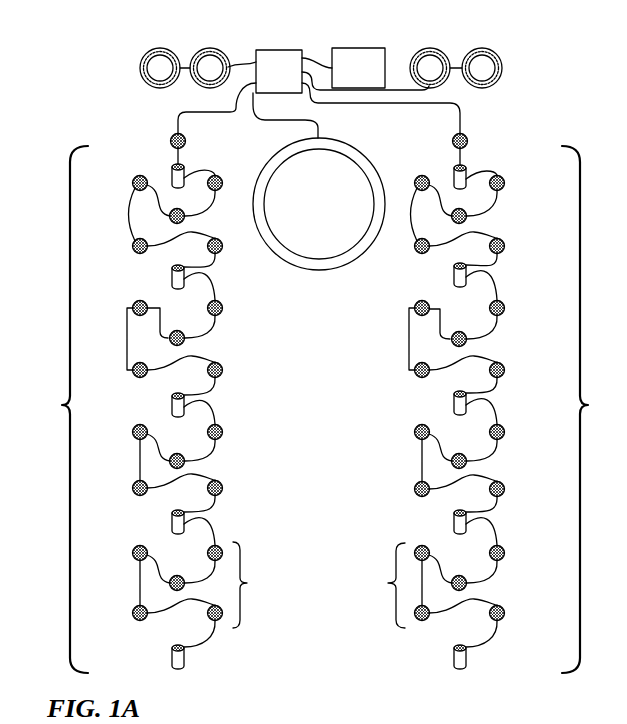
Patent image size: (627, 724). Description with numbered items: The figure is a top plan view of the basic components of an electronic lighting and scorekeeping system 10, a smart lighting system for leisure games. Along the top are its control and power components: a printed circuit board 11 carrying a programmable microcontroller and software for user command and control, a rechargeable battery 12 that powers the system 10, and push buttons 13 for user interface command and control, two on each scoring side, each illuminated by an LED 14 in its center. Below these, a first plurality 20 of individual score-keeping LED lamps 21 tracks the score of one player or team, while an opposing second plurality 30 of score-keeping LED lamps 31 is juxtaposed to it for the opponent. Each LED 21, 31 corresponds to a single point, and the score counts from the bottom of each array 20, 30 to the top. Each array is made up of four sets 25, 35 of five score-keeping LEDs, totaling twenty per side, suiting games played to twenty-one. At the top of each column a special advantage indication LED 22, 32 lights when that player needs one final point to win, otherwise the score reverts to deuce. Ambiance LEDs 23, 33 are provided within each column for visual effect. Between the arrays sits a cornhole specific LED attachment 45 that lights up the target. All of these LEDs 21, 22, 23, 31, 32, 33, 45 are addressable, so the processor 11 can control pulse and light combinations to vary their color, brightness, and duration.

The electronic lighting and scorekeeping system 10 is at (67, 122).
The printed circuit board 11 is at (274, 50).
The rechargeable battery 12 is at (360, 48).
The push button 13 is at (157, 48).
The LED 14 is at (208, 58).
The first plurality of score-keeping LED lamps 20 is at (486, 393).
The score-keeping LED lamp 21 is at (505, 185).
The advantage indication score-keeping LED 22 is at (468, 140).
The ambiance LED 23 is at (452, 406).
The set of five score-keeping LEDs 25 is at (423, 582).
The second plurality of score-keeping LED lamps 30 is at (161, 393).
The score-keeping LED lamp 31 is at (133, 182).
The advantage indication score-keeping LED 32 is at (171, 139).
The ambiance LED 33 is at (171, 406).
The set of five score-keeping LEDs 35 is at (211, 582).
The cornhole specific LED attachment 45 is at (372, 201).